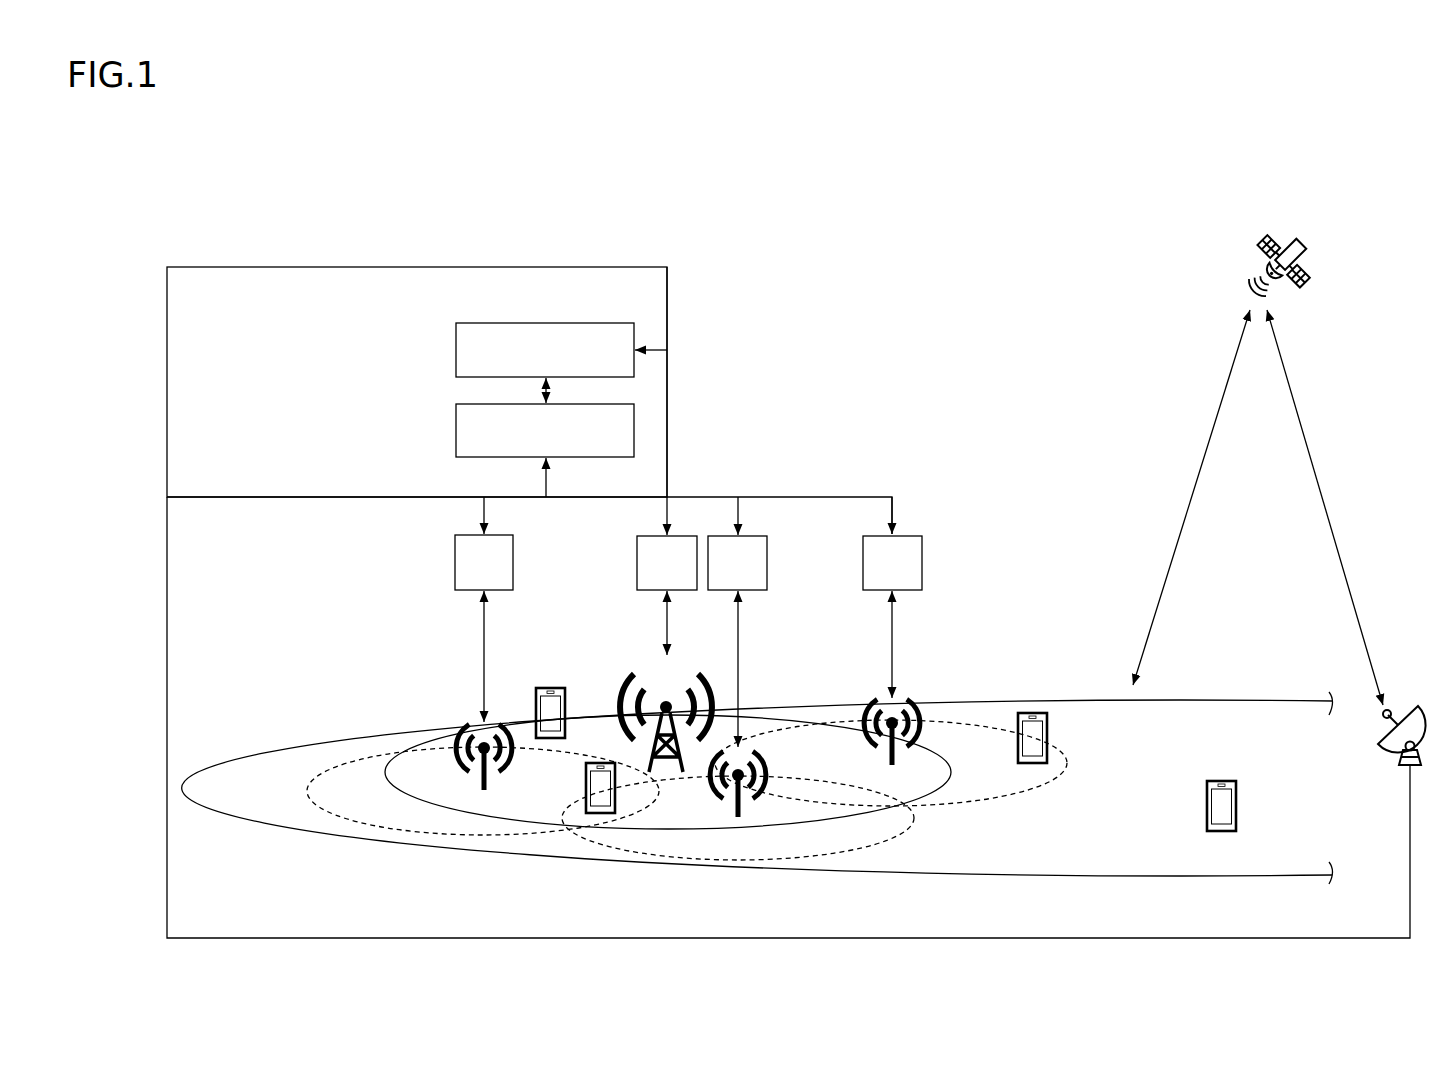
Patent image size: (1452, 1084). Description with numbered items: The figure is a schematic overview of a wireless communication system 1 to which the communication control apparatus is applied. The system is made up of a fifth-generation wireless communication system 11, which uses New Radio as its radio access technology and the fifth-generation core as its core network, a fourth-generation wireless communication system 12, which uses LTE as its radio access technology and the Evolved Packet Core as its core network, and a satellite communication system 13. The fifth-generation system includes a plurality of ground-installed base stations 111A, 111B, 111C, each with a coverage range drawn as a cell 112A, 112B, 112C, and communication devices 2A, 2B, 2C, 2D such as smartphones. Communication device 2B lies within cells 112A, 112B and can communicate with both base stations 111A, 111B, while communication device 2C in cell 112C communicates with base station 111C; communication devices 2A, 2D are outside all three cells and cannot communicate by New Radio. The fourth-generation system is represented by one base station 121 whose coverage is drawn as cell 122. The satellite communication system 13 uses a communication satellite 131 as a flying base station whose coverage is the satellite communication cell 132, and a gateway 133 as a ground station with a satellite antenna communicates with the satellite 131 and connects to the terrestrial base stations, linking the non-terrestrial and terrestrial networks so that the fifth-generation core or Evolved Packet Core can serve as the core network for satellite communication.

The wireless communication system 1 is at (911, 219).
The 5G wireless communication system 11 is at (863, 471).
The 4G wireless communication system 12 is at (709, 385).
The satellite communication system 13 is at (1181, 230).
The 4G base station 121 is at (713, 680).
The cell of 4G base station 122 is at (757, 718).
The communication satellite 131 is at (1299, 246).
The satellite communication cell 132 is at (1272, 700).
The gateway 133 is at (1410, 704).
The 5G base station 111A is at (458, 733).
The 5G base station 111B is at (766, 770).
The 5G base station 111C is at (918, 707).
The 5G cell 112A is at (379, 835).
The 5G cell 112B is at (855, 857).
The 5G cell 112C is at (1030, 797).
The communication device 2A is at (551, 686).
The communication device 2B is at (600, 761).
The communication device 2C is at (1030, 711).
The communication device 2D is at (1222, 779).